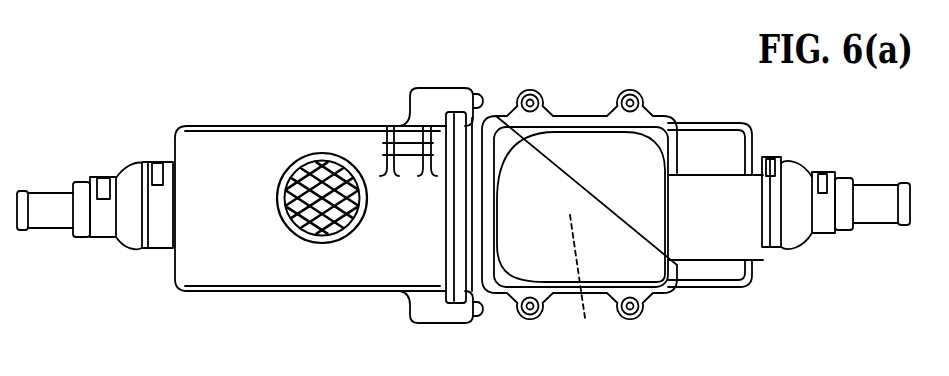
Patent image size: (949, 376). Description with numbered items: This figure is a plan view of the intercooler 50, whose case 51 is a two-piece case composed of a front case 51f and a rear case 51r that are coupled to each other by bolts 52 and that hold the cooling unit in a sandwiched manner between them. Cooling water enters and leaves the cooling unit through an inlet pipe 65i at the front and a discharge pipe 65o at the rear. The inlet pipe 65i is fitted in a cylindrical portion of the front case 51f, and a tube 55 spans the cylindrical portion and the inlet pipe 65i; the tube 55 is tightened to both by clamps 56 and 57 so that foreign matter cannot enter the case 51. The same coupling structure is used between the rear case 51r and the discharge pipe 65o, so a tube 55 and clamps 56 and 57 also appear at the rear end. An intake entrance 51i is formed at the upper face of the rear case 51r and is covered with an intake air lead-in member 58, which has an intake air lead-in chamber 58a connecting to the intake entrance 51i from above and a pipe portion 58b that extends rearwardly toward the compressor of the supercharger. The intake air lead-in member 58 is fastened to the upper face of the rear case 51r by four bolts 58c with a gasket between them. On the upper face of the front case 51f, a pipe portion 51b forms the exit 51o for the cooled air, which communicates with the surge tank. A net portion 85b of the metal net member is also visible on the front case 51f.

The intercooler 50 is at (760, 294).
The case 51 is at (404, 326).
The front case 51f is at (231, 268).
The pipe portion 51b is at (355, 228).
The exit 51o is at (325, 237).
The intake entrance 51i is at (611, 280).
The rear case 51r is at (697, 277).
The bolts 52 is at (480, 99).
The tube 55 is at (132, 249).
The clamp 56 is at (157, 249).
The clamp 57 is at (100, 237).
The intake air lead-in member 58 is at (612, 176).
The intake air lead-in chamber 58a is at (577, 266).
The pipe portion 58b is at (723, 250).
The bolts 58c is at (620, 98).
The inlet pipe 65i is at (48, 222).
The discharge pipe 65o is at (882, 218).
The net portion 85b is at (293, 237).